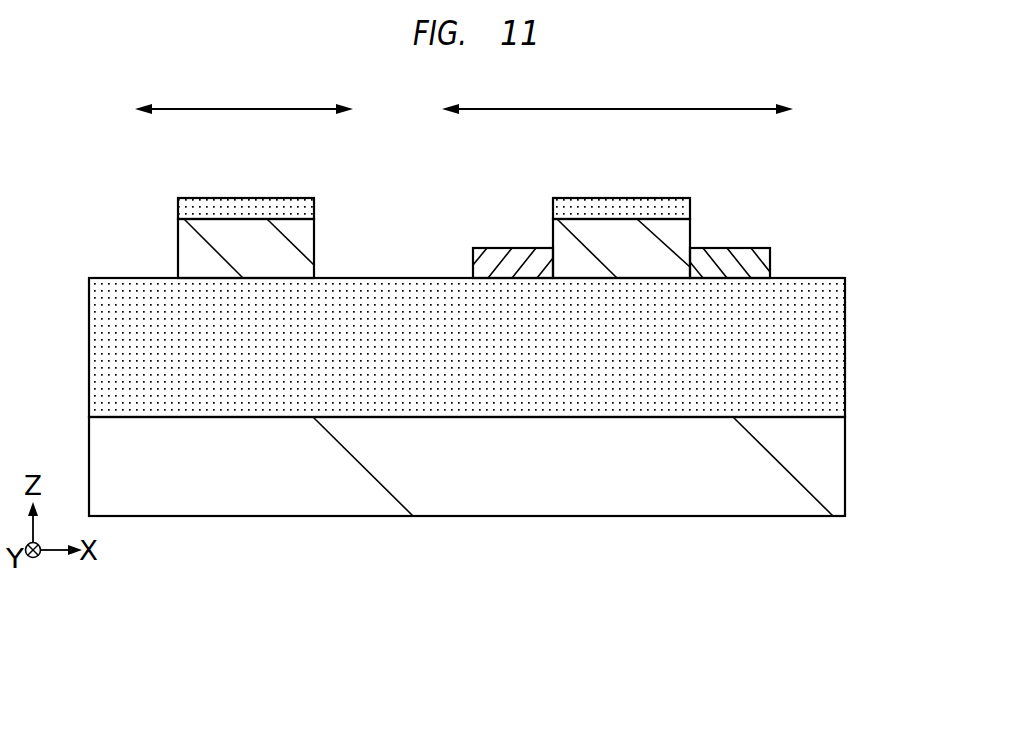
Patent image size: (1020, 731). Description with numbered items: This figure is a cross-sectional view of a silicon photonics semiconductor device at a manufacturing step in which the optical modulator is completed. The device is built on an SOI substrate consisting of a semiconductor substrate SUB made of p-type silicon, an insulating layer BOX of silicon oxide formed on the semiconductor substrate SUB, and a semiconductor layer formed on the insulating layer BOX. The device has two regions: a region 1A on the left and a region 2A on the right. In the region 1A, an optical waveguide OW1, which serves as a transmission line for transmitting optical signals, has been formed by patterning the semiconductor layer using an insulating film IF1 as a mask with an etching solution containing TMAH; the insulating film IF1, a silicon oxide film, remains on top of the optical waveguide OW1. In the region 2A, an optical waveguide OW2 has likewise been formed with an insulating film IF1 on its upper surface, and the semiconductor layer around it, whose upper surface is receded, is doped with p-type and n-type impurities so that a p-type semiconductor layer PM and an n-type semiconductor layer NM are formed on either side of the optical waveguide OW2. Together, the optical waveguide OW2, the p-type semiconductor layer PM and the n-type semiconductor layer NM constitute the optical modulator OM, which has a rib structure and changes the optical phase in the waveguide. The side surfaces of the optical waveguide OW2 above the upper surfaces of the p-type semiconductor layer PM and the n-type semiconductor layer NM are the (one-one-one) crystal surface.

The region 1A is at (244, 92).
The region 2A is at (617, 92).
The insulating film IF1 is at (247, 207).
The optical waveguide OW1 is at (252, 260).
The optical waveguide OW2 is at (635, 260).
The n-type semiconductor layer NM is at (503, 268).
The p-type semiconductor layer PM is at (735, 268).
The optical modulator OM is at (619, 431).
The insulating layer BOX is at (823, 352).
The semiconductor substrate SUB is at (823, 472).